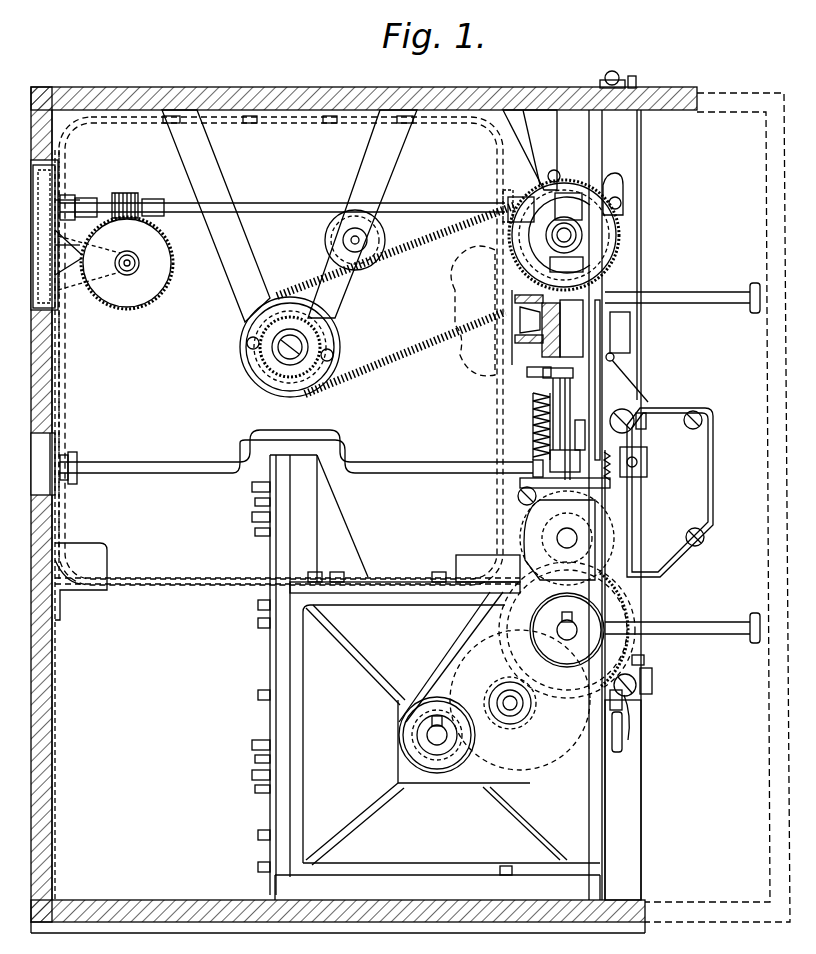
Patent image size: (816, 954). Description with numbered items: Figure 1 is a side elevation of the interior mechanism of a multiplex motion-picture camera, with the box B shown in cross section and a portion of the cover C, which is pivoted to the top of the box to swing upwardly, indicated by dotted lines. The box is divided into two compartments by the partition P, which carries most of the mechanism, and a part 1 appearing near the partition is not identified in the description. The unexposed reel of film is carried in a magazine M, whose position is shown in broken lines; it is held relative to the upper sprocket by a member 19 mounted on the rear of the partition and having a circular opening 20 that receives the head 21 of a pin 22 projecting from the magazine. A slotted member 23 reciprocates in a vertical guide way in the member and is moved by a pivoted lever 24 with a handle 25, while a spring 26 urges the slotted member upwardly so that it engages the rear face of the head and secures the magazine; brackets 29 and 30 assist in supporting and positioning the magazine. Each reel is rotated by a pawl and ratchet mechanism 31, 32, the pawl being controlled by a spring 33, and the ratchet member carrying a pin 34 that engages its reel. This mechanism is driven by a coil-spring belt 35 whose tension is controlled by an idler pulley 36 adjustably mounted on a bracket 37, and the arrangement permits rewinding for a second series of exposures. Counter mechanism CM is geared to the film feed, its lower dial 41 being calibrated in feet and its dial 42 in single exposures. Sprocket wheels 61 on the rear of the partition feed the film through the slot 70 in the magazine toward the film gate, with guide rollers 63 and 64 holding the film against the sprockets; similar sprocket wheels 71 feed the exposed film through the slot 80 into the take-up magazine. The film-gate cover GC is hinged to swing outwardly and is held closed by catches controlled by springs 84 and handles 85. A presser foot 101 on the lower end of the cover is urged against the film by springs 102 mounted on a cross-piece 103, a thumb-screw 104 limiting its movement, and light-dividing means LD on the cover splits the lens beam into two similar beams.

The box B is at (254, 88).
The cover C is at (740, 92).
The counter mechanism CM is at (70, 197).
The lower dial 41 is at (62, 285).
The dial 42 is at (126, 258).
The bracket 37 is at (392, 160).
The idler pulley 36 is at (380, 236).
The pawl 31 is at (248, 343).
The ratchet member 32 is at (268, 363).
The spring 33 is at (278, 297).
The pin 34 is at (322, 340).
The coil-spring belt 35 is at (402, 358).
The sprocket wheels 61 is at (622, 241).
The guide roller 63 is at (624, 206).
The guide roller 64 is at (553, 170).
The slot 70 is at (508, 190).
The partition P is at (596, 156).
The shaft 1 is at (709, 300).
The head 21 is at (528, 322).
The pin 22 is at (535, 328).
The member 19 is at (545, 305).
The slotted member 23 is at (585, 350).
The circular opening 20 is at (532, 362).
The handle 25 is at (520, 383).
The pivoted lever 24 is at (540, 378).
The spring 26 is at (530, 440).
The magazine M is at (158, 545).
The bracket 29 is at (78, 590).
The bracket 30 is at (475, 596).
The slot 80 is at (518, 498).
The sprocket wheels 71 is at (600, 548).
The light-dividing means LD is at (658, 492).
The cross-piece 103 is at (644, 658).
The thumb-screw 104 is at (652, 670).
The handles 85 is at (638, 684).
The springs 84 is at (628, 693).
The springs 102 is at (630, 700).
The presser foot 101 is at (614, 716).
The film-gate cover GC is at (622, 755).